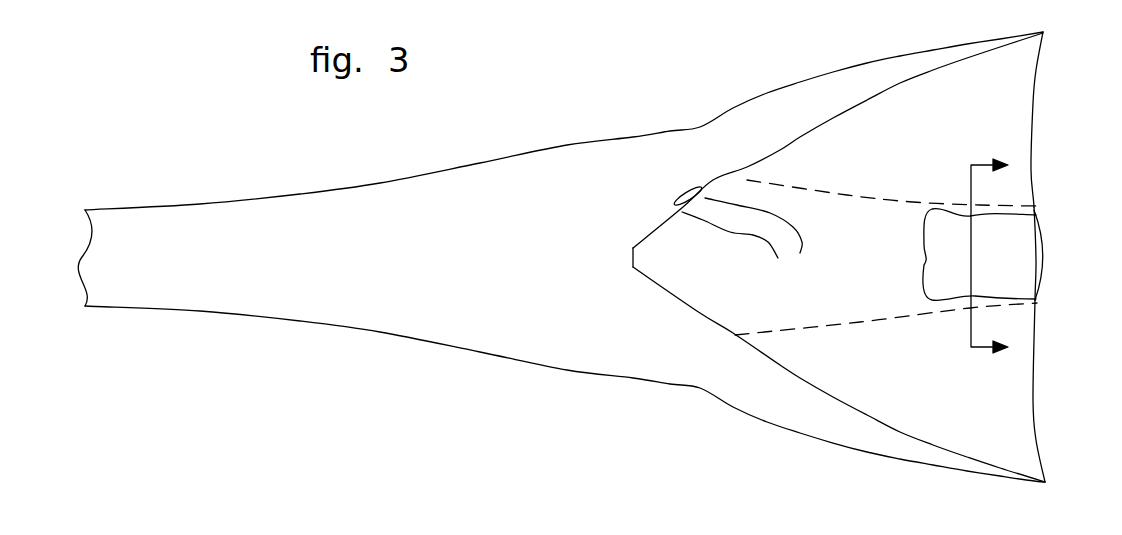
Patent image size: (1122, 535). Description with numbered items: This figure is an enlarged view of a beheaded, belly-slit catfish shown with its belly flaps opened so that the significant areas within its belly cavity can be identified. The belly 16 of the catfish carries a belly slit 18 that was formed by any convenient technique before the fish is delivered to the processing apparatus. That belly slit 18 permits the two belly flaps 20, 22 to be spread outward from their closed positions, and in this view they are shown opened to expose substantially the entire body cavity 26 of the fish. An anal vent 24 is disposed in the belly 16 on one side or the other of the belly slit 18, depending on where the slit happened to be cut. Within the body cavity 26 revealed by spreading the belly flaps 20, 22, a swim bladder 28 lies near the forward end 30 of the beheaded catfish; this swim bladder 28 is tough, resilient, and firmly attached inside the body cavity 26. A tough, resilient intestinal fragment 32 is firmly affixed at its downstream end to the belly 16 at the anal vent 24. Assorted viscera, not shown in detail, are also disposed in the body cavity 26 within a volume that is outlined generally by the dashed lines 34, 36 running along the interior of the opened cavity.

The belly 16 is at (377, 232).
The belly slit 18 is at (892, 100).
The belly flap 20 is at (1013, 85).
The belly flap 22 is at (1018, 413).
The anal vent 24 is at (680, 189).
The body cavity 26 is at (1062, 175).
The swim bladder 28 is at (1002, 248).
The forward end 30 is at (1050, 255).
The intestinal fragment 32 is at (748, 242).
The dashed line 34 is at (862, 209).
The dashed line 36 is at (873, 322).